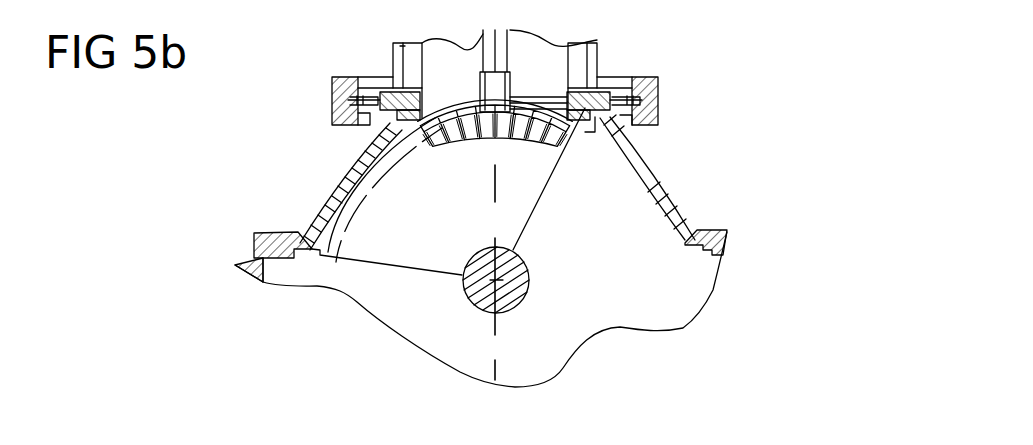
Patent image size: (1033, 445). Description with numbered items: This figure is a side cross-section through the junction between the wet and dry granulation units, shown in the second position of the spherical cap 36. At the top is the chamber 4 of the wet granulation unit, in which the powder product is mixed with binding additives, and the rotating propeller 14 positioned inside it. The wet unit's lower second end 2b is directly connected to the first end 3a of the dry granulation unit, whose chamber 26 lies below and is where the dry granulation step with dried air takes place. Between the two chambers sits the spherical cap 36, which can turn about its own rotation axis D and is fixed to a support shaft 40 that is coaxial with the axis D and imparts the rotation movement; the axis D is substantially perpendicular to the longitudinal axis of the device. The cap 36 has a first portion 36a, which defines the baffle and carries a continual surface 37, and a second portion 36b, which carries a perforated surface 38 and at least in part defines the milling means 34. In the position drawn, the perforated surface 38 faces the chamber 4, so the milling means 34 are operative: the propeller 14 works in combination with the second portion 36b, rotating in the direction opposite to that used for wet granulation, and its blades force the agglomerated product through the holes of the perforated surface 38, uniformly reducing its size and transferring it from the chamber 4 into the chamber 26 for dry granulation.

The chamber 4 is at (452, 58).
The second end 2b is at (440, 88).
The rotating propeller 14 is at (519, 86).
The perforated surface 38 is at (568, 92).
The first end 3a is at (556, 128).
The first portion 36a is at (372, 191).
The second portion 36b is at (608, 185).
The spherical cap 36 is at (555, 197).
The continual surface 37 is at (362, 236).
The milling means 34 is at (466, 149).
The support shaft 40 is at (510, 295).
The chamber 26 is at (677, 307).
The rotation axis D is at (468, 303).